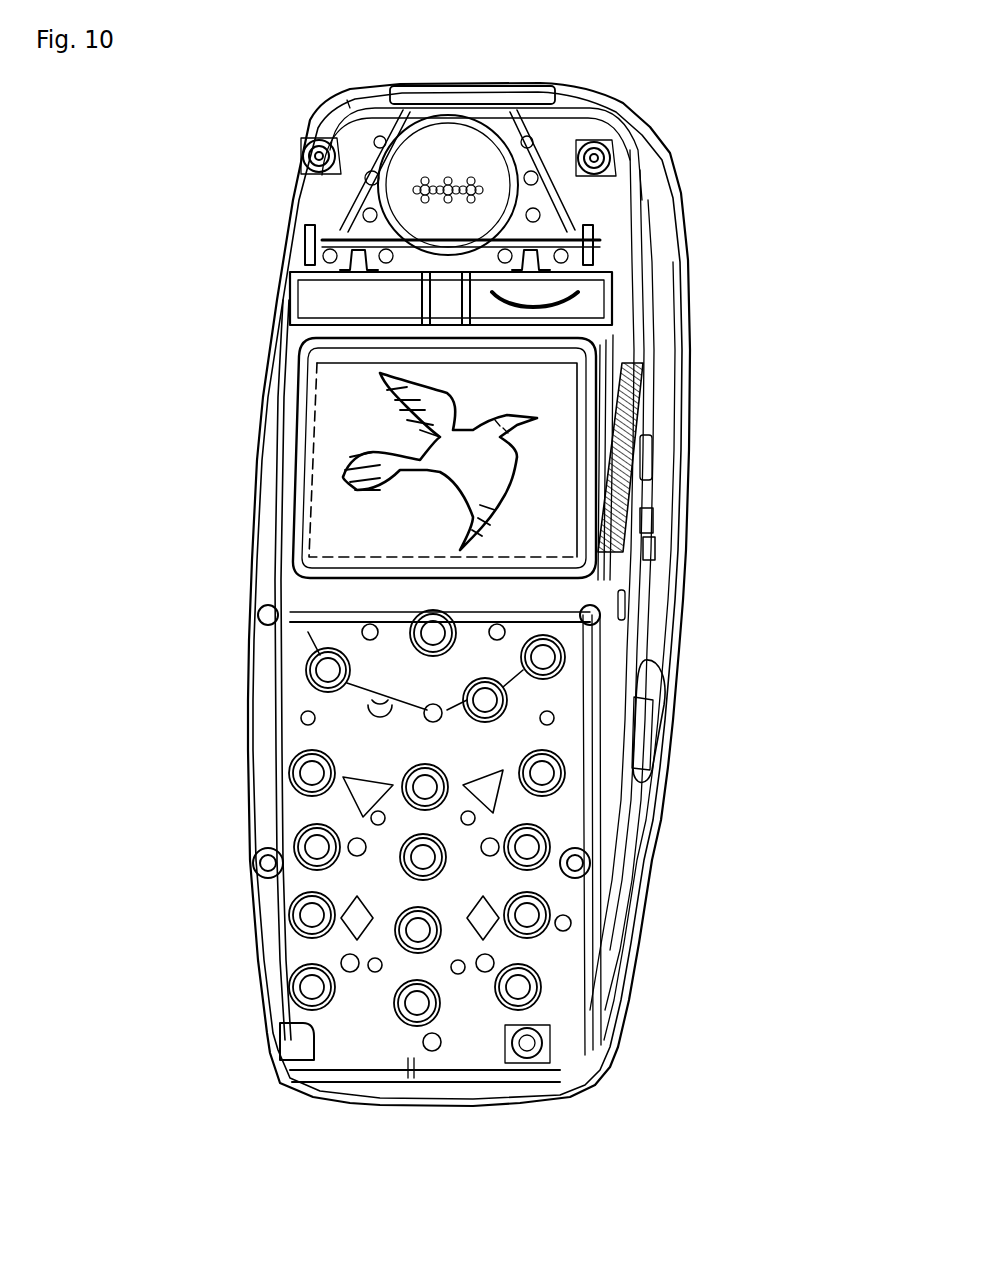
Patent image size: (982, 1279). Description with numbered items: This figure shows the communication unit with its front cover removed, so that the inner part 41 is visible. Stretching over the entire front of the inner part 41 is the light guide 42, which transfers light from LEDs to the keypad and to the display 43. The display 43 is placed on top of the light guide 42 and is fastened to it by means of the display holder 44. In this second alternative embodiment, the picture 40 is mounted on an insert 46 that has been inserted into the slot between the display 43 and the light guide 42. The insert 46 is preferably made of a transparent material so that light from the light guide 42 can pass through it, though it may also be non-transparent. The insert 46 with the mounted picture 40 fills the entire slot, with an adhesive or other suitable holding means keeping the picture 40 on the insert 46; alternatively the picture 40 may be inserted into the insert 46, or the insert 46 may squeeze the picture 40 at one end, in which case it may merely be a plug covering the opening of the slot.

The picture 40 is at (467, 451).
The inner part 41 is at (642, 230).
The light guide 42 is at (392, 742).
The display 43 is at (333, 407).
The display holder 44 is at (587, 303).
The insert 46 is at (615, 522).